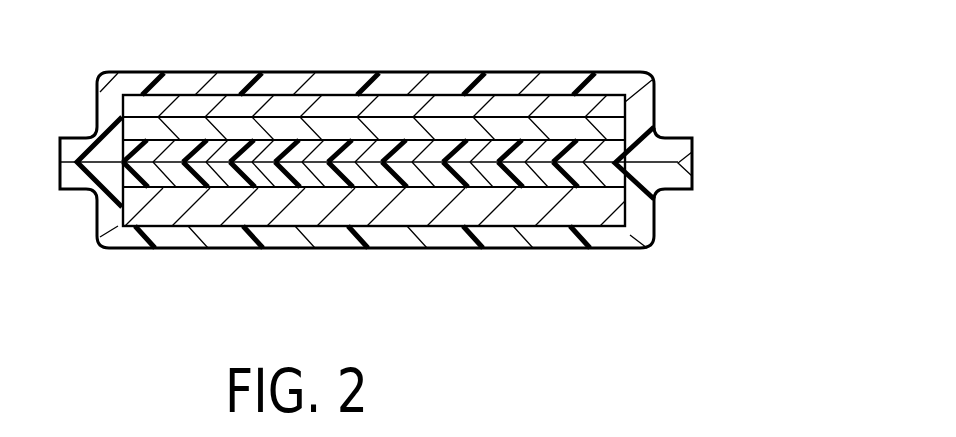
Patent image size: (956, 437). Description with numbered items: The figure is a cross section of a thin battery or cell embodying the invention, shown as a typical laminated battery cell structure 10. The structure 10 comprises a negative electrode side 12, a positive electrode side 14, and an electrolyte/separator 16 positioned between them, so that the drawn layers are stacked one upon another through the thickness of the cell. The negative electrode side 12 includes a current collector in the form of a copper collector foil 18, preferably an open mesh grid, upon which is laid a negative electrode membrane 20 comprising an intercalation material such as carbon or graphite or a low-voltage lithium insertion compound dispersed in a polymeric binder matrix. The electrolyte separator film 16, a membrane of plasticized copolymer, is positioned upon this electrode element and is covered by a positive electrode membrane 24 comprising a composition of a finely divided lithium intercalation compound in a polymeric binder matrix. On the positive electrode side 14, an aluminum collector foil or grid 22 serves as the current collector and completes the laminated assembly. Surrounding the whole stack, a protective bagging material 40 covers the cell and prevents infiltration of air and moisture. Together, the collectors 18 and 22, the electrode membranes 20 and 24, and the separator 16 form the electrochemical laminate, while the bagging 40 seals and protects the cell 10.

The laminated battery cell structure 10 is at (688, 70).
The negative electrode side 12 is at (245, 93).
The positive electrode side 14 is at (383, 225).
The electrolyte/separator 16 is at (607, 150).
The copper collector foil 18 is at (413, 107).
The negative electrode membrane 20 is at (133, 130).
The aluminum collector foil or grid 22 is at (133, 217).
The positive electrode membrane 24 is at (608, 178).
The protective bagging material 40 is at (562, 243).